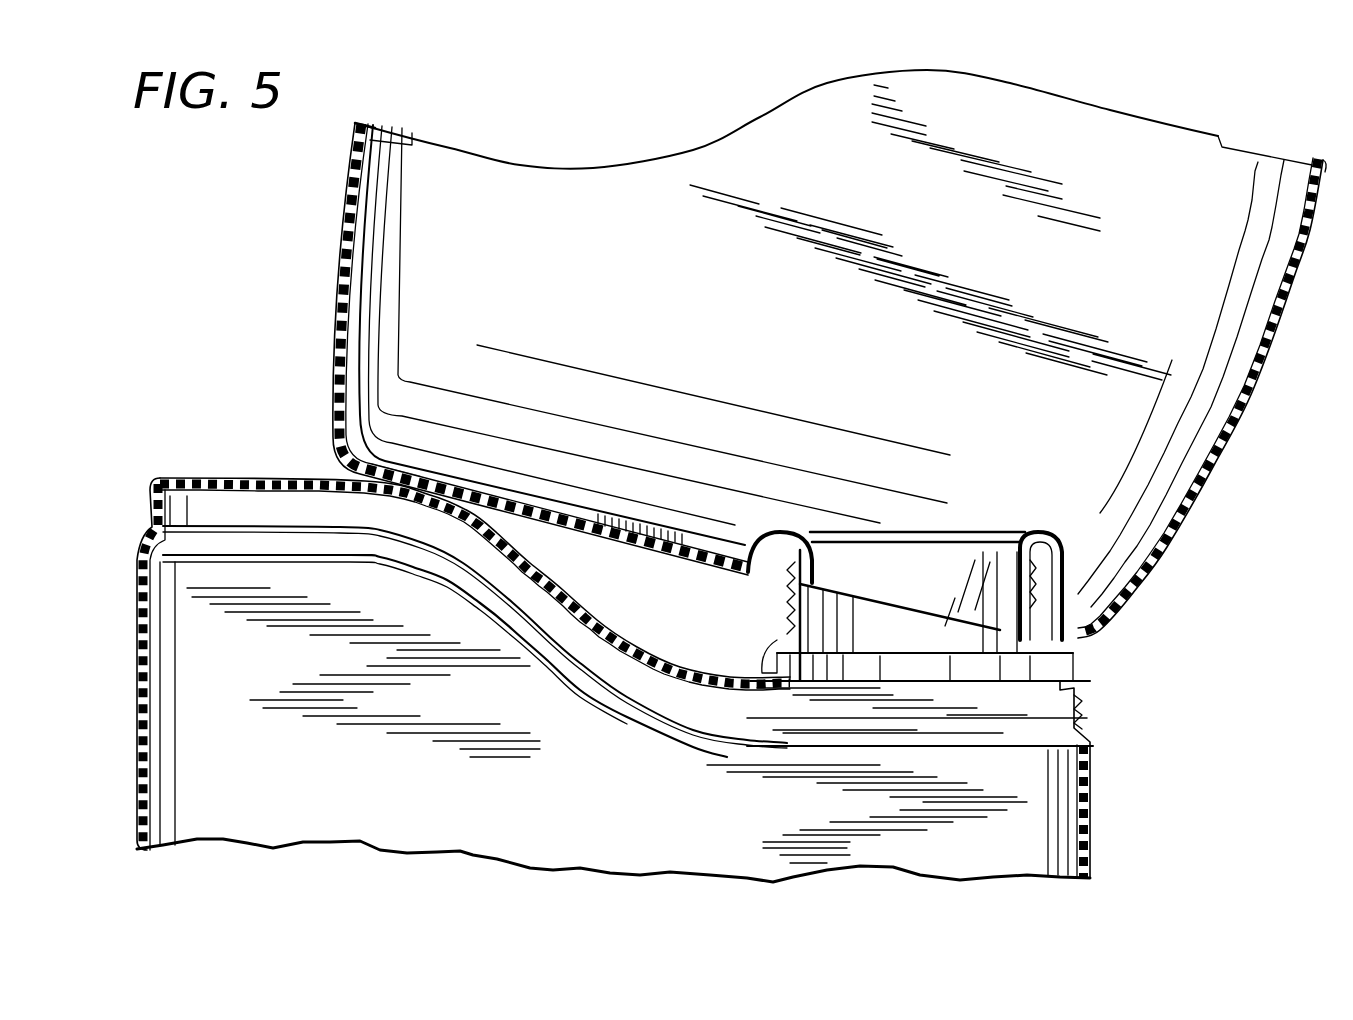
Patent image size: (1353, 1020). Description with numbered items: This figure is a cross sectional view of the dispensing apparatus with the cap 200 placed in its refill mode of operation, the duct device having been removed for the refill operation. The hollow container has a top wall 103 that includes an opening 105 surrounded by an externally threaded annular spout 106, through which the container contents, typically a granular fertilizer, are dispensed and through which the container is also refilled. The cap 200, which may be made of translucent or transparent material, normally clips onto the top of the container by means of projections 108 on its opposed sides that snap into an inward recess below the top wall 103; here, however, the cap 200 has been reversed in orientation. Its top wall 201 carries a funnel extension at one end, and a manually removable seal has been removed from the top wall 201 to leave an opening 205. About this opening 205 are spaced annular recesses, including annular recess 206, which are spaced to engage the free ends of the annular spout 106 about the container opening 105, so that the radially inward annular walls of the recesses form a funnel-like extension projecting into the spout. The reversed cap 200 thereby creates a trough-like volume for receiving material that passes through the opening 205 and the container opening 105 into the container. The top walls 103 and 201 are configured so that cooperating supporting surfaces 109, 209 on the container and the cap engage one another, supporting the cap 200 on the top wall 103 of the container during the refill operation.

The top wall of the container 103 is at (632, 640).
The opening 105 is at (957, 663).
The externally threaded annular spout 106 is at (800, 682).
The projections 108 is at (402, 140).
The supporting surface 109 is at (380, 487).
The cap 200 is at (1169, 566).
The top wall of the cap 201 is at (597, 520).
The opening 205 is at (955, 622).
The annular recess 206 is at (787, 530).
The supporting surface 209 is at (420, 487).